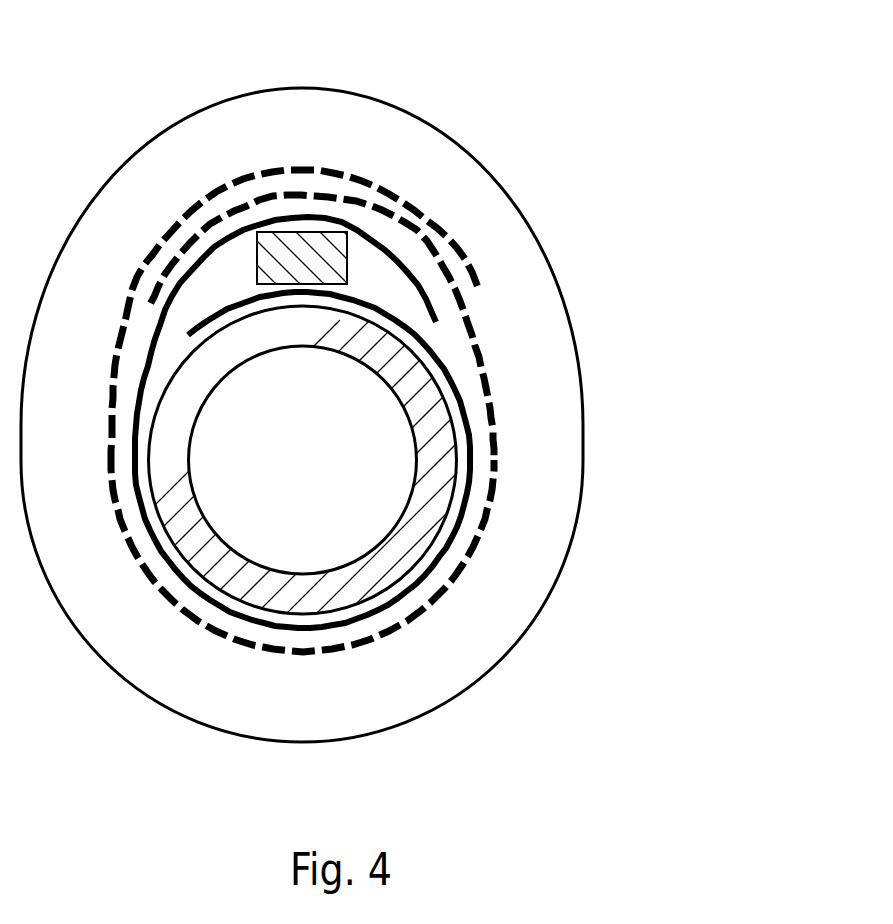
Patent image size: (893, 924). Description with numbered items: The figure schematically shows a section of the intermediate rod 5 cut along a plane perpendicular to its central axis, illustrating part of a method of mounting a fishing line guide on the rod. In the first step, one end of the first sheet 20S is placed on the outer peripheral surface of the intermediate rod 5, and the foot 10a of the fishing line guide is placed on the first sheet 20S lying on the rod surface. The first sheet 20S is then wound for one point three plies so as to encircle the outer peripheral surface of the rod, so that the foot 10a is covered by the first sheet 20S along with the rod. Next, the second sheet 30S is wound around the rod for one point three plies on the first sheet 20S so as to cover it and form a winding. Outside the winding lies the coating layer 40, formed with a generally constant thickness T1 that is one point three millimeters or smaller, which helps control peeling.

The coating layer 40 is at (200, 133).
The second sheet 30S is at (357, 177).
The first sheet 20S is at (462, 390).
The foot 10a is at (330, 258).
The intermediate rod 5 is at (443, 453).
The thickness of the coating layer T1 is at (302, 89).